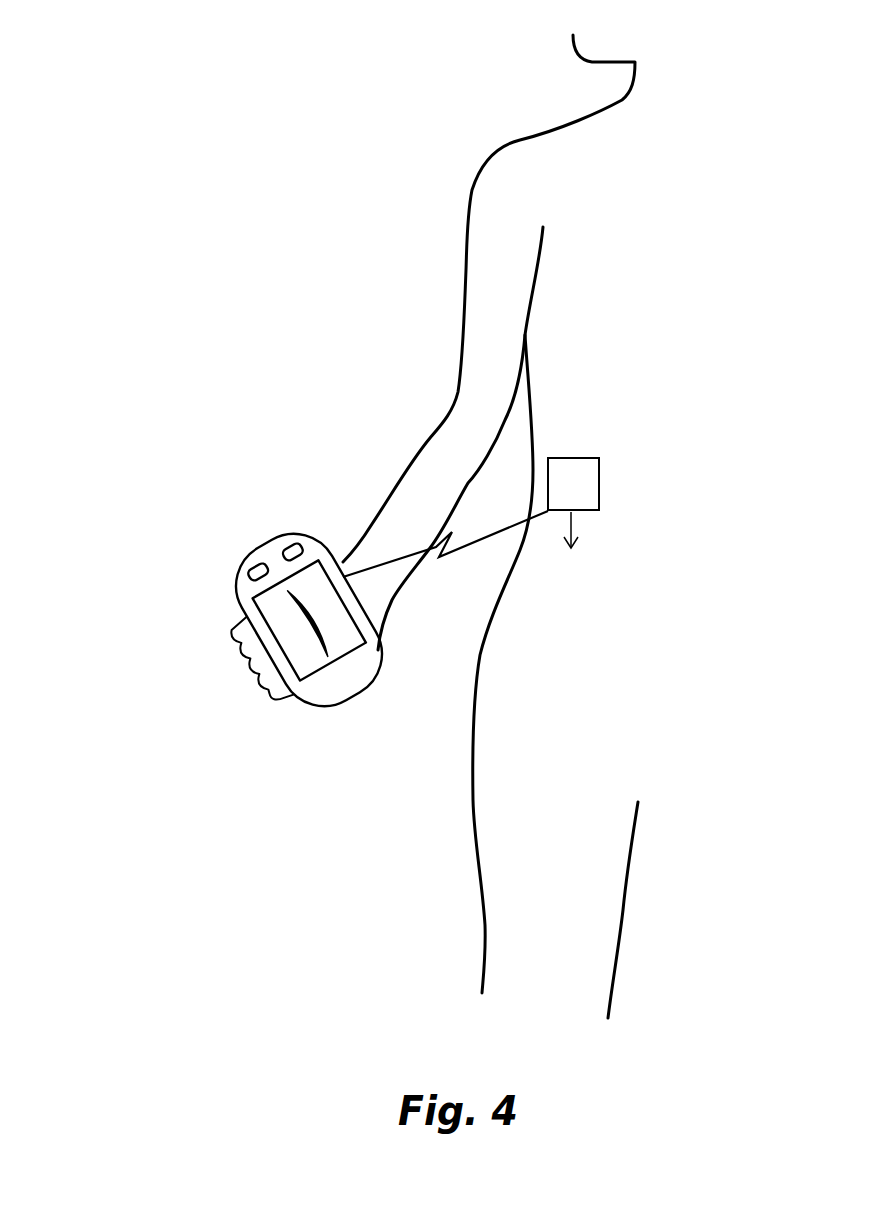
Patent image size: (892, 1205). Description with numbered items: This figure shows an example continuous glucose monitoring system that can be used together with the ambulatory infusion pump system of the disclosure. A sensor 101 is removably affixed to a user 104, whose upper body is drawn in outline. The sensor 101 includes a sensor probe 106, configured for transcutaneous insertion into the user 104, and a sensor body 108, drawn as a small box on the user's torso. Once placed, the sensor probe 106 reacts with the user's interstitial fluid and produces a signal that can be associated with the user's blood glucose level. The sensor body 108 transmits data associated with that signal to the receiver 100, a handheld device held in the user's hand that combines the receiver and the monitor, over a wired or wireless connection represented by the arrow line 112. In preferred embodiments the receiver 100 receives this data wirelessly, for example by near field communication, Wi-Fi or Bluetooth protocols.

The receiver 100 is at (237, 598).
The sensor 101 is at (626, 429).
The user 104 is at (487, 127).
The sensor probe 106 is at (574, 552).
The sensor body 108 is at (599, 494).
The arrow line 112 is at (405, 550).